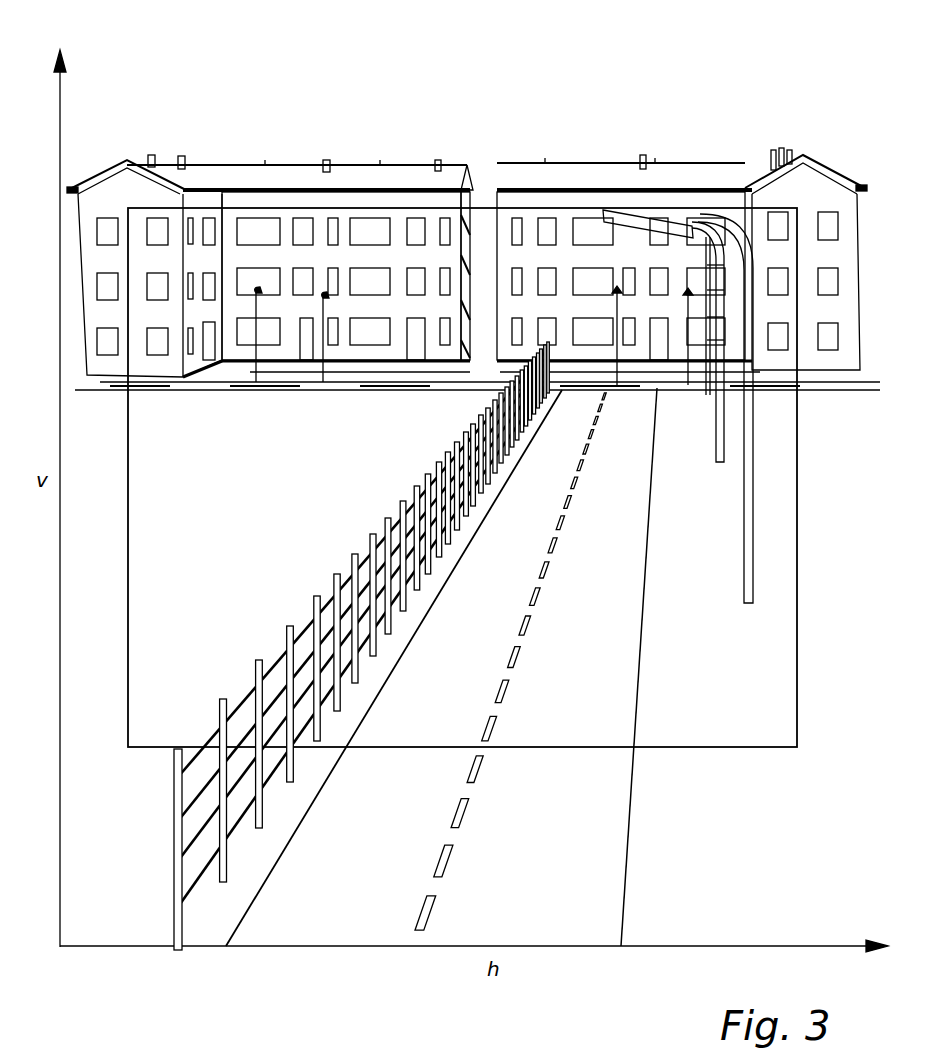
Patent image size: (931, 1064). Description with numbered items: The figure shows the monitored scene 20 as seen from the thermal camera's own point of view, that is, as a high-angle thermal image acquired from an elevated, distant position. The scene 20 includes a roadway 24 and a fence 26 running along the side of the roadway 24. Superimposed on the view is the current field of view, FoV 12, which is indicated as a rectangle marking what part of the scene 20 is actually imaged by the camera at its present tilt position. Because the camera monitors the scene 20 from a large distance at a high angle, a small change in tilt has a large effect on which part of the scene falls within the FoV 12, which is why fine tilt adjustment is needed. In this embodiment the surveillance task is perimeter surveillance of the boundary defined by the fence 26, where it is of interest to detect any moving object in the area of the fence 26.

The scene 20 is at (614, 124).
The current field of view 12 is at (385, 750).
The roadway 24 is at (342, 908).
The fence 26 is at (305, 633).